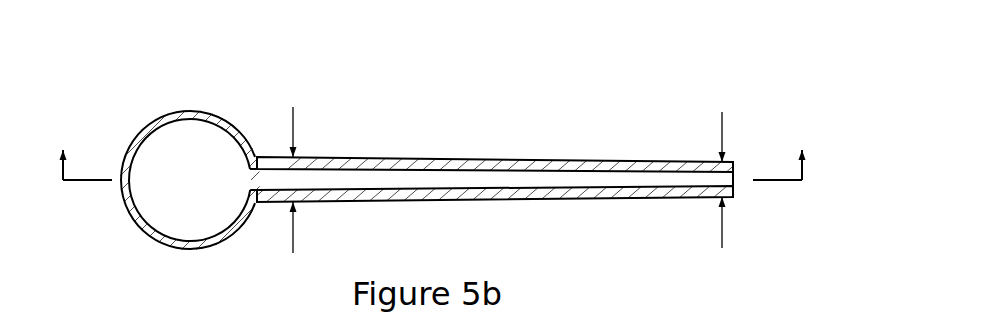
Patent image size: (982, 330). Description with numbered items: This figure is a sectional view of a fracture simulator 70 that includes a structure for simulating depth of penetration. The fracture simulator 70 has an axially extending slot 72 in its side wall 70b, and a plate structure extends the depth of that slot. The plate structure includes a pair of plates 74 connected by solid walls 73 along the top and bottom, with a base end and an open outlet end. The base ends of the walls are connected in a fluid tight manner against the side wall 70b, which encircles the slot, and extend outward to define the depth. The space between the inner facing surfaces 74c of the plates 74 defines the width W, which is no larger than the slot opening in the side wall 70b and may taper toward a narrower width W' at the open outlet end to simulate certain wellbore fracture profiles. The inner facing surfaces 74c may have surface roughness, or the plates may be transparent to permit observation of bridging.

The fracture simulator 70 is at (716, 30).
The side wall 70b is at (193, 110).
The axially extending slot 72 is at (254, 168).
The solid walls 73 is at (392, 178).
The plates 74 is at (625, 160).
The inner facing surfaces 74c is at (558, 187).